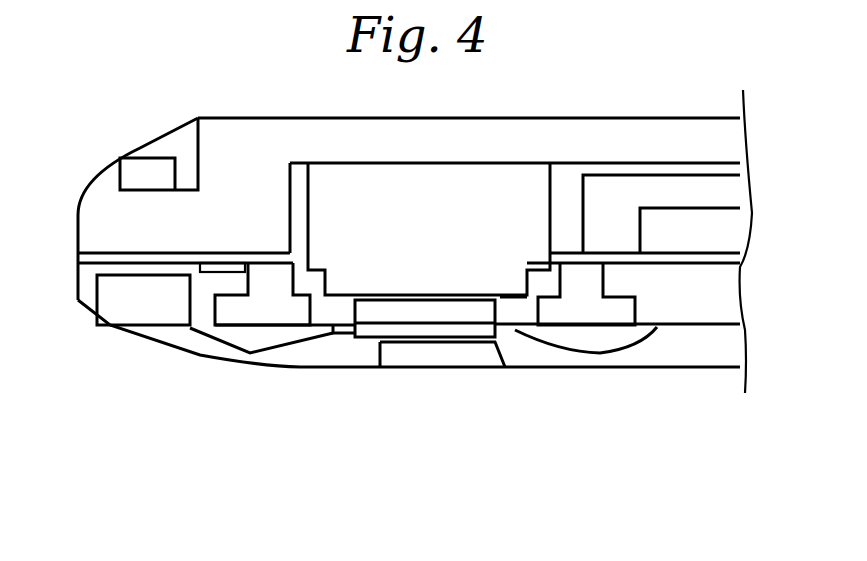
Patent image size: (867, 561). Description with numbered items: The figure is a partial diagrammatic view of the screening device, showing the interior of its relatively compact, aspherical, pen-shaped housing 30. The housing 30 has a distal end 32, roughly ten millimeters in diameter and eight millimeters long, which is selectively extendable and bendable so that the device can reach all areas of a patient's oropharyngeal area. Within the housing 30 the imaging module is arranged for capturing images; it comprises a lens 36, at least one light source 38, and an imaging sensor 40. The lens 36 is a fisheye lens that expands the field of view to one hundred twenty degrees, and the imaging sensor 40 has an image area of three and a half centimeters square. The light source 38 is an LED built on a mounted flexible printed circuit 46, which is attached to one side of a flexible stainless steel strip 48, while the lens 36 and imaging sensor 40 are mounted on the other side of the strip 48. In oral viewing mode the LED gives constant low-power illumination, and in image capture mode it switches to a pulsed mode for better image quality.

The housing 30 is at (590, 135).
The distal end 32 is at (138, 109).
The lens 36 is at (478, 313).
The light source 38 is at (277, 280).
The imaging sensor 40 is at (440, 233).
The flexible printed circuit 46 is at (203, 272).
The flexible stainless steel strip 48 is at (93, 258).